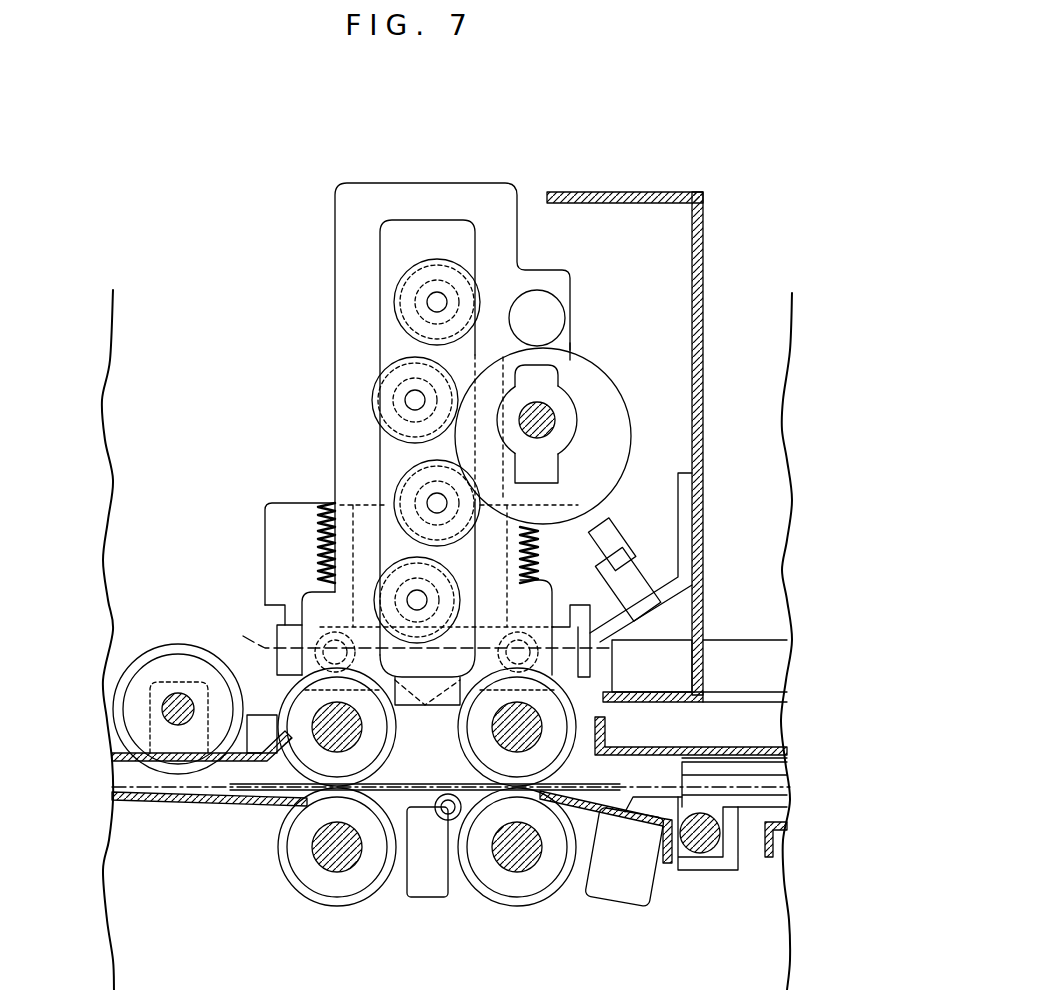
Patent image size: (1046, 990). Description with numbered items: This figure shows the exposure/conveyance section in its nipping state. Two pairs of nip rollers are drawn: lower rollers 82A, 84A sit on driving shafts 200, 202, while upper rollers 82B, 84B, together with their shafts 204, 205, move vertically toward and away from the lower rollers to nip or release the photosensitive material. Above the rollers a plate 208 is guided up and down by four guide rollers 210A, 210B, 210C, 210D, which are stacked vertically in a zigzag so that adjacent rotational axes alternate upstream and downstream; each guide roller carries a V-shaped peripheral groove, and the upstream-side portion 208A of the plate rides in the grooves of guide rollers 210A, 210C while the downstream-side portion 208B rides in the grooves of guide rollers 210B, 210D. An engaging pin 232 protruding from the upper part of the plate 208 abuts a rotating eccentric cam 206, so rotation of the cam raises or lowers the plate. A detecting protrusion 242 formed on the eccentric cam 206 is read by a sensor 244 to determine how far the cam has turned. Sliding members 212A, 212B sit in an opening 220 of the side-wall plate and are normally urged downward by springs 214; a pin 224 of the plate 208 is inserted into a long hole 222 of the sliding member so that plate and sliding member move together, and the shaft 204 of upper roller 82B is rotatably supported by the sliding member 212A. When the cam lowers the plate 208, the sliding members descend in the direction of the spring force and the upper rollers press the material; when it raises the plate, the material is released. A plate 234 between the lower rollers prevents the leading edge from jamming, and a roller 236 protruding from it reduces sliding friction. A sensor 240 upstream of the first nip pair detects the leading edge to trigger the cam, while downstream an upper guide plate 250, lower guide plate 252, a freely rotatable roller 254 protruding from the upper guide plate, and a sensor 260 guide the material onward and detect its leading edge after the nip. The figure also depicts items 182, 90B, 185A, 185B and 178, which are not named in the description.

The plate 208 is at (428, 183).
The upstream-side portion 208A is at (495, 335).
The downstream-side portion 208B is at (352, 343).
The guide roller 210A is at (393, 290).
The guide roller 210B is at (373, 398).
The guide roller 210C is at (399, 482).
The guide roller 210D is at (375, 596).
The engaging pin 232 is at (540, 305).
The eccentric cam 206 is at (603, 390).
The detecting protrusion 242 is at (547, 474).
The opening 220 is at (262, 512).
The spring 214 is at (320, 557).
The sensor 244 is at (600, 541).
The sliding member 212A is at (690, 627).
The sliding member 212B is at (278, 627).
The pin 224 is at (440, 652).
The sensor 240 is at (753, 650).
The long hole 222 is at (403, 735).
The roller 254 is at (147, 652).
The upper roller 84B is at (290, 702).
The upper roller 82B is at (597, 716).
The lower roller 84A is at (307, 893).
The lower roller 82A is at (565, 880).
The shaft 205 is at (312, 748).
The shaft 204 is at (540, 735).
The shaft 202 is at (342, 862).
The shaft 200 is at (520, 862).
The plate 234 is at (415, 800).
The roller 236 is at (438, 822).
The sheet path 182 is at (793, 782).
The guide plate 90B is at (723, 763).
The upper guide 185A is at (770, 745).
The lower guide 185B is at (780, 830).
The roller 178 is at (697, 845).
The lower guide plate 252 is at (178, 801).
The sensor 260 is at (208, 762).
The upper guide plate 250 is at (235, 766).